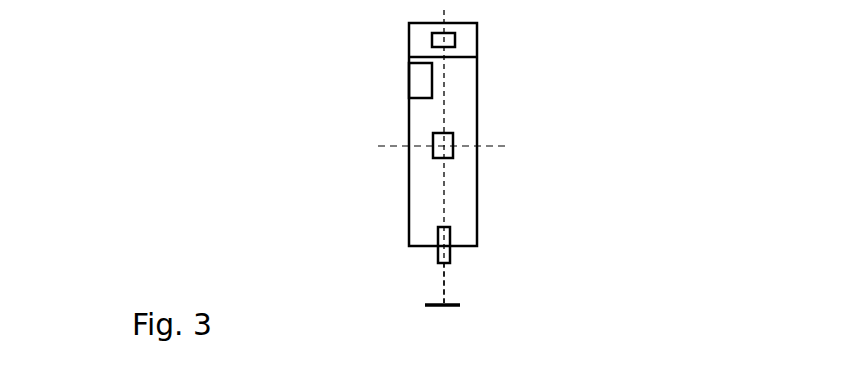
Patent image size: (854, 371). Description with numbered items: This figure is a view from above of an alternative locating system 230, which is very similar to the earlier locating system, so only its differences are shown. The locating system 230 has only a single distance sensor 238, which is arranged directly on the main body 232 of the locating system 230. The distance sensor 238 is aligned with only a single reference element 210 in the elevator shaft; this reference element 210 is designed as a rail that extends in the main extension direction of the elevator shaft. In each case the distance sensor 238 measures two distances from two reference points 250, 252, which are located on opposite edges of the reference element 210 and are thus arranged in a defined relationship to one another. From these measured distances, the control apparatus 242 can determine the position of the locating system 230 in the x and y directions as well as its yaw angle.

The locating system 230 is at (377, 140).
The main body 232 is at (479, 93).
The control apparatus 242 is at (425, 78).
The distance sensor 238 is at (264, 250).
The reference element 210 is at (447, 304).
The reference point 250 is at (458, 305).
The reference point 252 is at (425, 305).